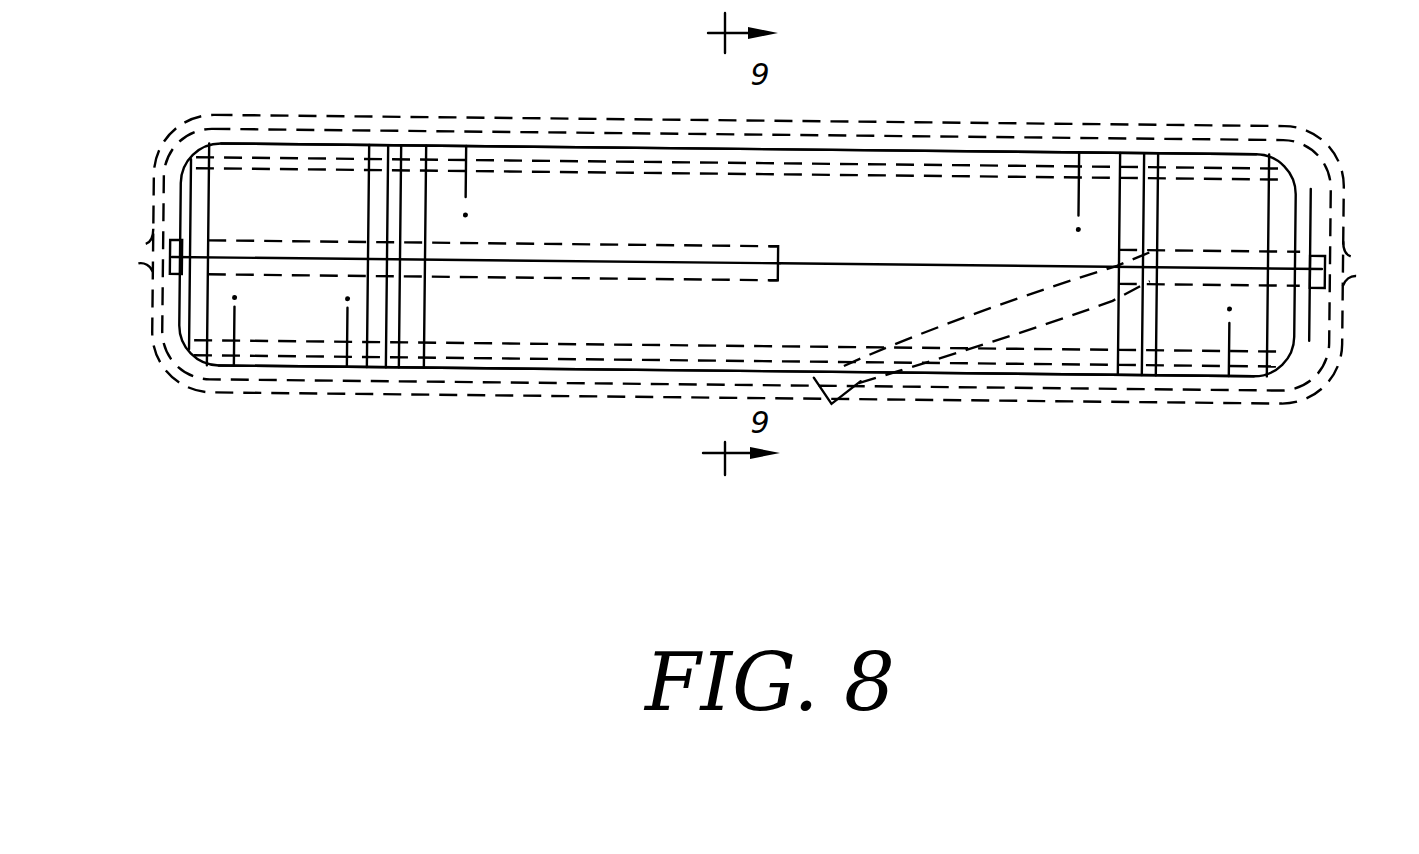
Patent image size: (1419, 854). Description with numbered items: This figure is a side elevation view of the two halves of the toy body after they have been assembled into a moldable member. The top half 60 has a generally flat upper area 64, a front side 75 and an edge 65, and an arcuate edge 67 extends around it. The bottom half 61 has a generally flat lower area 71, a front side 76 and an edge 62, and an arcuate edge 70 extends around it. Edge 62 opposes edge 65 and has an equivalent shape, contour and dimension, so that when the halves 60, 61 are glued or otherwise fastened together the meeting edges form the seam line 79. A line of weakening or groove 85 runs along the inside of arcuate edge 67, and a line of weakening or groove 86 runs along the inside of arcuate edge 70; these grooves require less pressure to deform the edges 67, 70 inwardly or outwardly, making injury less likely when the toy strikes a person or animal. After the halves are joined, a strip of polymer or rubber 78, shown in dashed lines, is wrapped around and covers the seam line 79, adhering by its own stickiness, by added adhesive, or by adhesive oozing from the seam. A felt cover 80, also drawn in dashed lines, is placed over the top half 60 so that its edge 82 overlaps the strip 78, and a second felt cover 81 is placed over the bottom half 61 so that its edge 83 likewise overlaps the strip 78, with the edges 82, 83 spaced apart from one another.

The top half 60 is at (1098, 205).
The bottom half 61 is at (318, 328).
The edge 62 is at (850, 268).
The upper area 64 is at (1012, 150).
The edge 65 is at (893, 263).
The arcuate edge 67 is at (1300, 167).
The arcuate edge 70 is at (192, 353).
The lower area 71 is at (1034, 376).
The front side 75 is at (753, 225).
The front side 76 is at (653, 322).
The polymer strip 78 is at (530, 243).
The seam line 79 is at (1000, 248).
The felt cover 80 is at (500, 105).
The felt cover 81 is at (1172, 411).
The edge 82 is at (135, 210).
The edge 83 is at (128, 288).
The line of weakening 85 is at (330, 173).
The line of weakening 86 is at (482, 340).